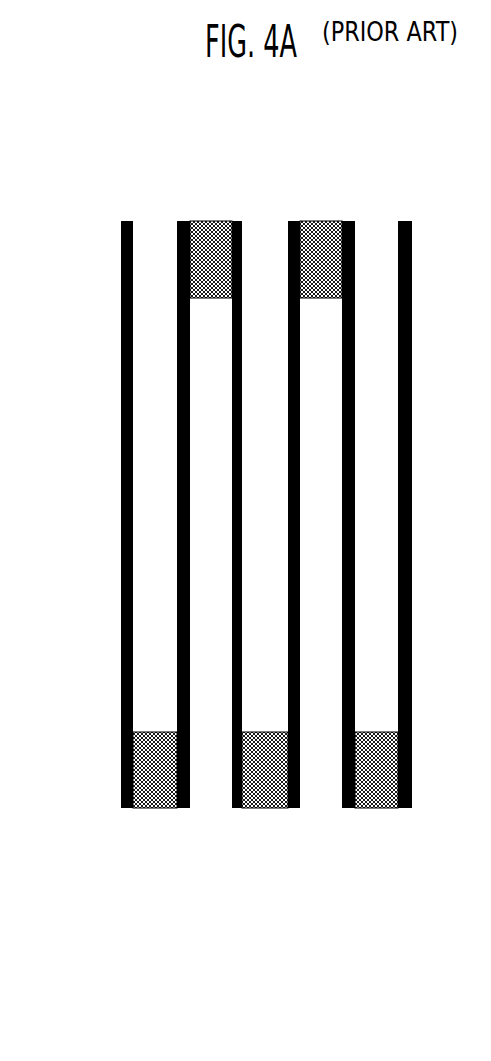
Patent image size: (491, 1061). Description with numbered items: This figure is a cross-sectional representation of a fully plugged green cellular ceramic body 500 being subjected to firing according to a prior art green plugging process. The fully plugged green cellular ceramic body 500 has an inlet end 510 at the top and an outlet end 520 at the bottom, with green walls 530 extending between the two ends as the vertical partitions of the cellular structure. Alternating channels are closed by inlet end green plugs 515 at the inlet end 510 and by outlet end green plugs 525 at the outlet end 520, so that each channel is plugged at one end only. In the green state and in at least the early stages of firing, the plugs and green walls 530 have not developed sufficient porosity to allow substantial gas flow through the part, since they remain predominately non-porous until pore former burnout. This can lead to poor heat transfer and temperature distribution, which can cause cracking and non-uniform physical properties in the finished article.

The fully plugged green cellular ceramic body 500 is at (270, 343).
The inlet end 510 is at (121, 222).
The inlet end green plugs 515 is at (312, 263).
The outlet end 520 is at (121, 808).
The outlet end green plugs 525 is at (262, 772).
The green walls 530 is at (190, 768).